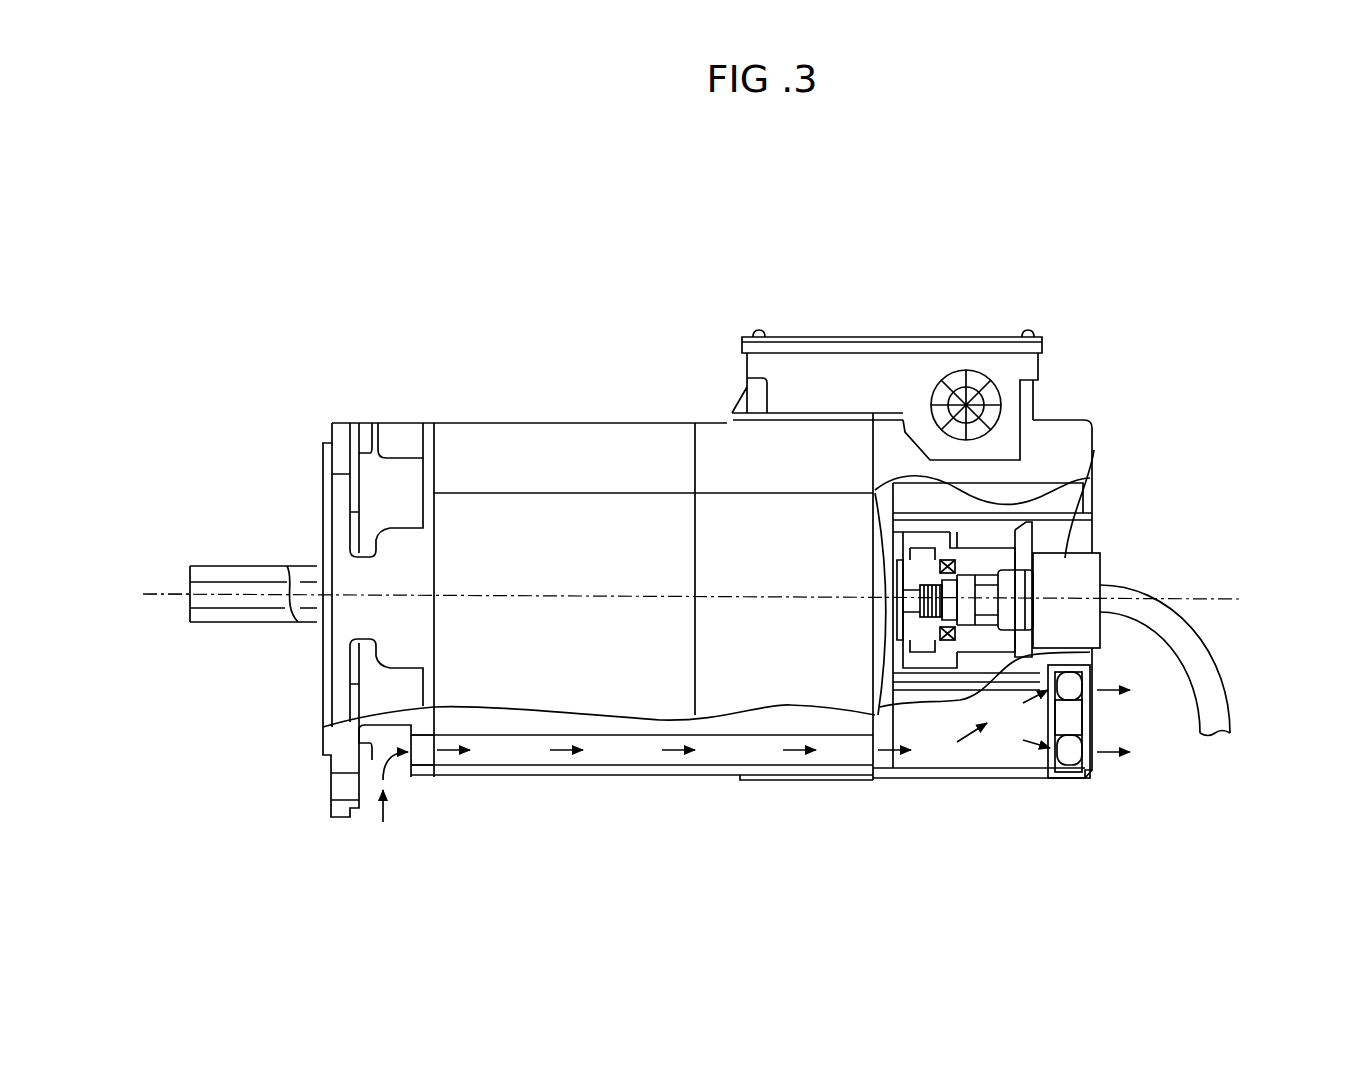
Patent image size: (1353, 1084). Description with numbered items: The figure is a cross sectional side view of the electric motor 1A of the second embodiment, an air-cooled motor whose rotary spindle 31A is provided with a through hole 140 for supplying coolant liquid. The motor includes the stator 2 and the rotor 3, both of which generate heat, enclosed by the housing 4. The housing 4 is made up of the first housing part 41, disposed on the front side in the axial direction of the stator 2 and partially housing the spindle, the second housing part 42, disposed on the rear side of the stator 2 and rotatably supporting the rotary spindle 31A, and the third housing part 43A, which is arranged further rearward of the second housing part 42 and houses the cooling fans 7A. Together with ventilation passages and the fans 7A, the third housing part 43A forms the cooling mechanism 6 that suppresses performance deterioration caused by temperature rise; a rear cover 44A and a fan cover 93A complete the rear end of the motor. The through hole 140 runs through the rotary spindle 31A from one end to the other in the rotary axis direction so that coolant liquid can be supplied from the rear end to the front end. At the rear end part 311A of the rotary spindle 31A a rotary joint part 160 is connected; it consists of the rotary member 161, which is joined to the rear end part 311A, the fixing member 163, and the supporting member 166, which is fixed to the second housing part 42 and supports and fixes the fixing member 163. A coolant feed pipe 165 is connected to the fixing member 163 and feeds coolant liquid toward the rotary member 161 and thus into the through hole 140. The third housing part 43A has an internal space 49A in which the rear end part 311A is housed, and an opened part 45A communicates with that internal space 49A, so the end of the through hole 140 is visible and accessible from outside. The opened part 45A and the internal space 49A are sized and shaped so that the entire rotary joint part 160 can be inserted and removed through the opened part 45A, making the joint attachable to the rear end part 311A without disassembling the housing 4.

The electric motor 1A is at (836, 220).
The stator 2 is at (612, 440).
The rotor 3 is at (523, 530).
The housing 4 is at (338, 408).
The first housing part 41 is at (376, 416).
The second housing part 42 is at (728, 416).
The third housing part 43A is at (1052, 421).
The rear cover 44A is at (1094, 448).
The opened part 45A is at (1098, 548).
The internal space 49A is at (1098, 530).
The rotary joint part 160 is at (1084, 580).
The rotary member 161 is at (985, 595).
The fixing member 163 is at (1088, 535).
The coolant feed pipe 165 is at (1213, 650).
The supporting member 166 is at (982, 663).
The rear end part 311A is at (928, 628).
The rotary spindle 31A is at (250, 566).
The through hole 140 is at (233, 603).
The cooling mechanism 6 is at (998, 806).
The vent grille 7A is at (1063, 782).
The fan cover 93A is at (1096, 772).